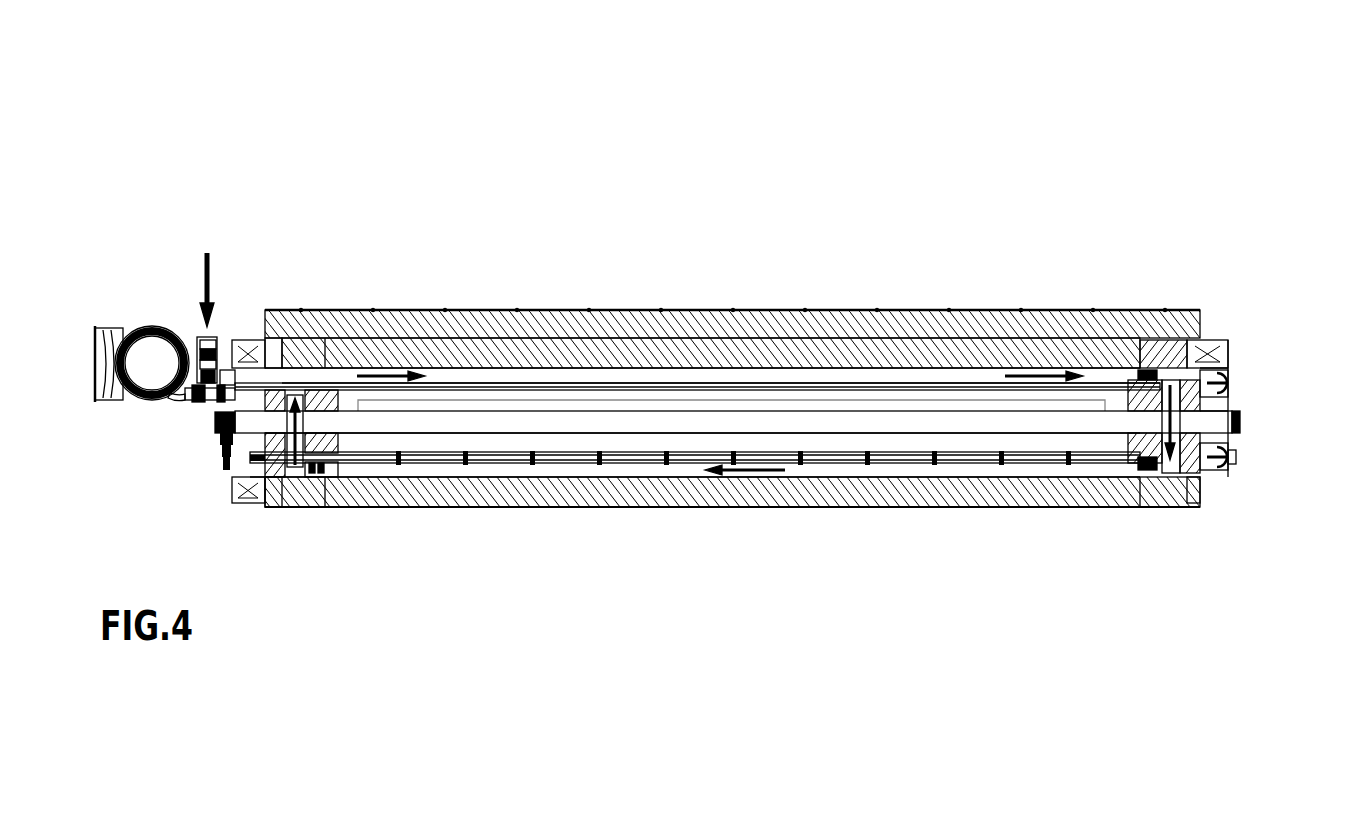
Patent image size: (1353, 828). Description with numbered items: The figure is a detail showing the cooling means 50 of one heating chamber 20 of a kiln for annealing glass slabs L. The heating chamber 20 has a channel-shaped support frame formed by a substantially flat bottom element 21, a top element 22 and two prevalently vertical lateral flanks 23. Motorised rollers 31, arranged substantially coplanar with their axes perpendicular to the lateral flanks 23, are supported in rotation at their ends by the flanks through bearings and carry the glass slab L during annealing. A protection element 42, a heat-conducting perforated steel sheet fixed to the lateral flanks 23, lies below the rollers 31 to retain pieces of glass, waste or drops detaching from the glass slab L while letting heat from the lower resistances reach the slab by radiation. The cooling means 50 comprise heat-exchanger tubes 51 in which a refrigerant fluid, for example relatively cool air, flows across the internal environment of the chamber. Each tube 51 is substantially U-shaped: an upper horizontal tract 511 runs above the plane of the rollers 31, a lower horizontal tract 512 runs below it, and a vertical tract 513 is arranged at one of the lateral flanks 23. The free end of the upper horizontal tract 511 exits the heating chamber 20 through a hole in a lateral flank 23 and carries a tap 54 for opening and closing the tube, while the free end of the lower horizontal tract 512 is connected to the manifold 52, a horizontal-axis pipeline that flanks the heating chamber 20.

The heating chamber 20 is at (265, 182).
The bottom element 21 is at (593, 498).
The top element 22 is at (1090, 345).
The lateral flanks 23 is at (1202, 443).
The motorised rollers 31 is at (245, 423).
The protection element 42 is at (493, 450).
The cooling means 50 is at (140, 307).
The heat-exchanger tube 51 is at (638, 365).
The upper horizontal tract 511 is at (495, 375).
The lower horizontal tract 512 is at (373, 470).
The vertical tract 513 is at (1230, 402).
The manifold 52 is at (150, 400).
The tap 54 is at (203, 337).
The glass slab L is at (905, 400).